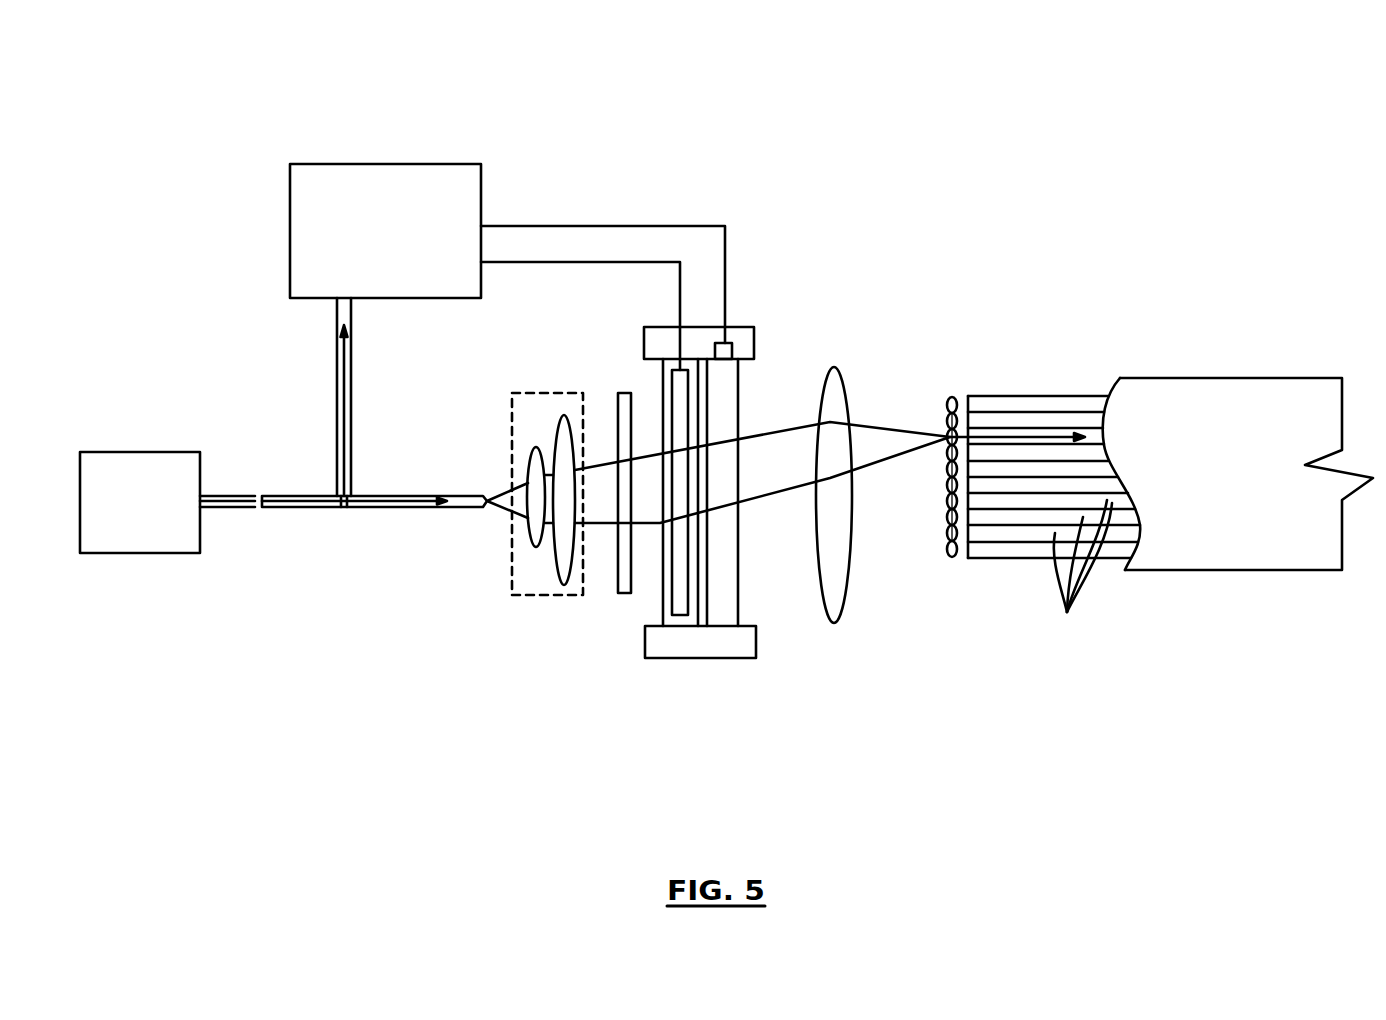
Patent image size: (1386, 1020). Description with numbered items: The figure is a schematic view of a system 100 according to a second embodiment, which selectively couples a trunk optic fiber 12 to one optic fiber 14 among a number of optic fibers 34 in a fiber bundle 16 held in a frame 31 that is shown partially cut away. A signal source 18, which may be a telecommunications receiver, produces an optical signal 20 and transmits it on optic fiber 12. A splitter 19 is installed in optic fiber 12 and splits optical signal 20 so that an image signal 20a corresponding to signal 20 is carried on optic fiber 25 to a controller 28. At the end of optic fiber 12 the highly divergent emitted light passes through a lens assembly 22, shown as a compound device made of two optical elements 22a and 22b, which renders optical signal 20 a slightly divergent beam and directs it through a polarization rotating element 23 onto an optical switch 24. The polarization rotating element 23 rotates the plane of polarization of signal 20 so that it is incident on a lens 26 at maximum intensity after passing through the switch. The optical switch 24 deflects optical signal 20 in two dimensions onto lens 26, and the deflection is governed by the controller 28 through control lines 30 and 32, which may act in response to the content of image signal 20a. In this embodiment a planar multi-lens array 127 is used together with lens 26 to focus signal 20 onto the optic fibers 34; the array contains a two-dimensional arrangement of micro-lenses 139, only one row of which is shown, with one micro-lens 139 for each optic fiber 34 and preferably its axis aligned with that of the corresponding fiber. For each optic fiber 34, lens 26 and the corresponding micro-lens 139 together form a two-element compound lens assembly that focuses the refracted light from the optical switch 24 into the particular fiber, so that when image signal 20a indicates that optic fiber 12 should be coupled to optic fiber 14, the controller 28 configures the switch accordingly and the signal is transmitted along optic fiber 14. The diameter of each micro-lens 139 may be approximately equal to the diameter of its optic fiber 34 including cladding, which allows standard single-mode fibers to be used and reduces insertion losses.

The system 100 is at (862, 140).
The controller 28 is at (428, 164).
The control line 32 is at (610, 226).
The control line 30 is at (580, 264).
The optic fiber 25 is at (337, 317).
The image signal 20a is at (337, 388).
The signal source 18 is at (128, 556).
The optic fiber 12 is at (283, 510).
The splitter 19 is at (345, 510).
The optical signal 20 is at (390, 510).
The lens assembly 22 is at (514, 597).
The optical element 22a is at (528, 540).
The optical element 22b is at (573, 588).
The polarization rotating element 23 is at (625, 597).
The optical switch 24 is at (716, 660).
The lens 26 is at (834, 368).
The micro-lens 139 is at (949, 398).
The planar multi-lens array 127 is at (954, 557).
The fiber bundle 16 is at (1000, 396).
The optic fiber 14 is at (995, 432).
The frame 31 is at (1250, 392).
The optic fibers 34 is at (1083, 574).